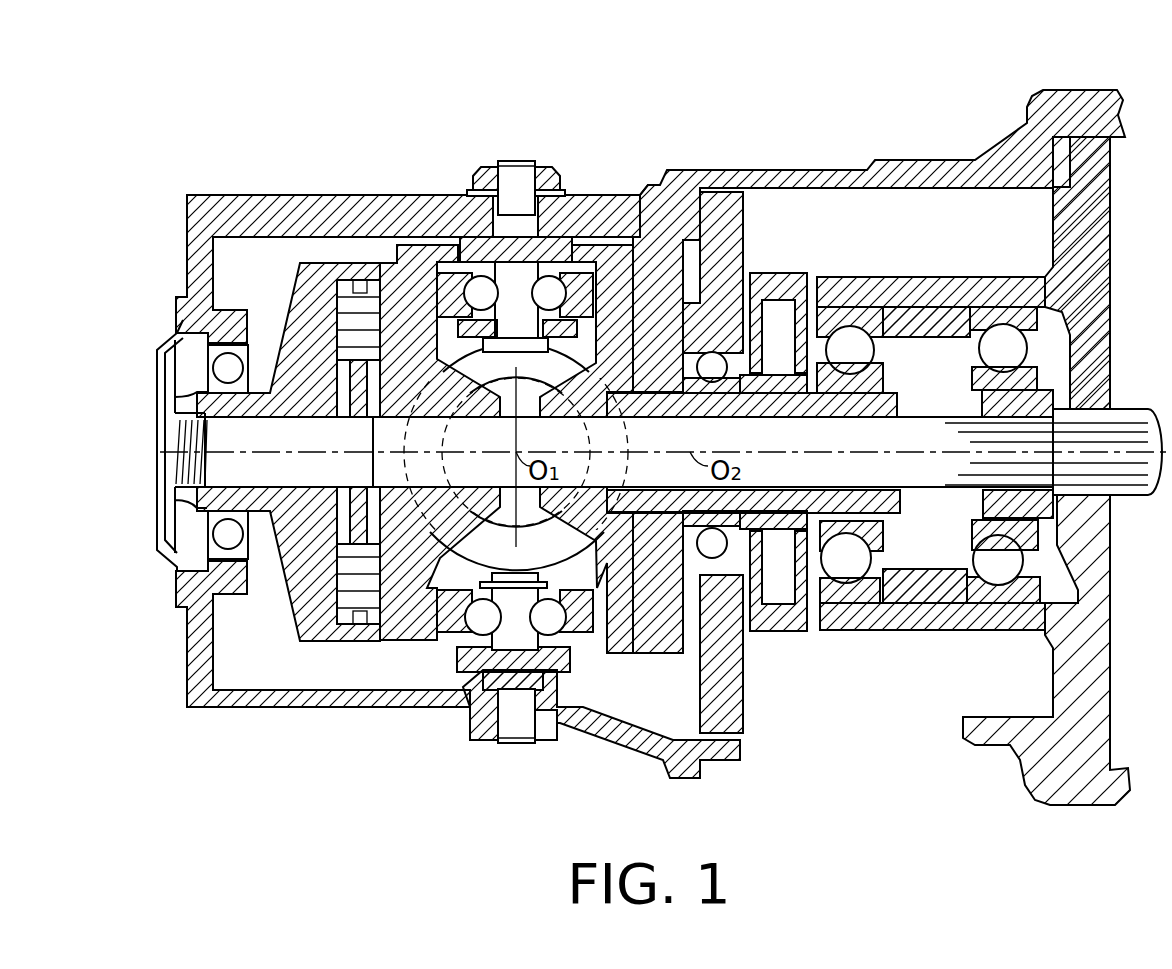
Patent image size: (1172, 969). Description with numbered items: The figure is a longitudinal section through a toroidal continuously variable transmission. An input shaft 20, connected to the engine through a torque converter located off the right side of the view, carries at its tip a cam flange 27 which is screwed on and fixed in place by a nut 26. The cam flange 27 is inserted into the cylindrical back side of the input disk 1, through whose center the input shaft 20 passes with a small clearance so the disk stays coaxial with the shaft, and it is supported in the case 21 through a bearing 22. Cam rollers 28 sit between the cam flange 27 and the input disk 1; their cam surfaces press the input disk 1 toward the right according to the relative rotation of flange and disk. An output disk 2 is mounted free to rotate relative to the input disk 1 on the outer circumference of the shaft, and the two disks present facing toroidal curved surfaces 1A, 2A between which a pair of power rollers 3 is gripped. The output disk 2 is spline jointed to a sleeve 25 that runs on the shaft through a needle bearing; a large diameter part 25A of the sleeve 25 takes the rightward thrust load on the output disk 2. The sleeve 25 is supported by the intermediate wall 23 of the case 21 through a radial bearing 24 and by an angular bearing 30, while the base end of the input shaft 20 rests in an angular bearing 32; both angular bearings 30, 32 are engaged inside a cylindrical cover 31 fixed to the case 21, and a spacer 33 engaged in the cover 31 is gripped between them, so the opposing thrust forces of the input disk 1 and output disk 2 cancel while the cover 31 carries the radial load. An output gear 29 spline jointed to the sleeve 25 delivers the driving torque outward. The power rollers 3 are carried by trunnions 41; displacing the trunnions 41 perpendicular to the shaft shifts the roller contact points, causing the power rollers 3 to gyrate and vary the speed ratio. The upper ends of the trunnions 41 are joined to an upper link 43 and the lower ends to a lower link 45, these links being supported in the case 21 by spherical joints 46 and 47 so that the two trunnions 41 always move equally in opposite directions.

The input disk 1 is at (395, 245).
The toroidal curved surface 1A is at (433, 330).
The output disk 2 is at (683, 230).
The housing step 2A is at (640, 193).
The power rollers 3 is at (603, 323).
The input shaft 20 is at (220, 463).
The case 21 is at (770, 393).
The bearing 22 is at (213, 330).
The intermediate wall 23 is at (712, 352).
The radial bearing 24 is at (735, 250).
The sleeve 25 is at (780, 300).
The large diameter part 25A is at (683, 545).
The nut 26 is at (193, 402).
The cam flange 27 is at (293, 320).
The cam rollers 28 is at (343, 300).
The output gear 29 is at (780, 622).
The angular bearing 30 is at (852, 340).
The cover 31 is at (1088, 160).
The angular bearing 32 is at (1003, 330).
The spacer 33 is at (913, 307).
The trunnions 41 is at (447, 300).
The upper link 43 is at (468, 322).
The lower link 45 is at (430, 682).
The spherical joint 46 is at (560, 247).
The spherical joint 47 is at (478, 632).